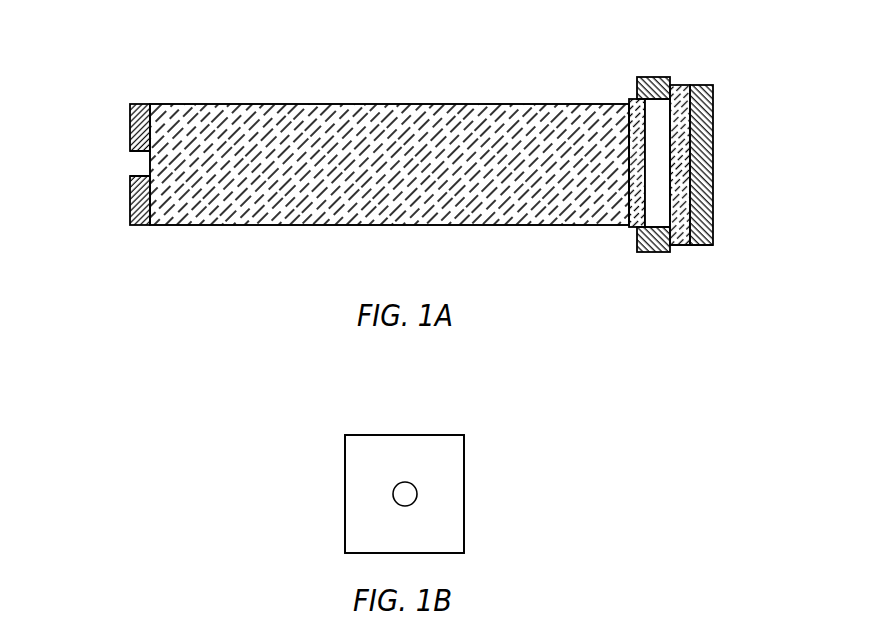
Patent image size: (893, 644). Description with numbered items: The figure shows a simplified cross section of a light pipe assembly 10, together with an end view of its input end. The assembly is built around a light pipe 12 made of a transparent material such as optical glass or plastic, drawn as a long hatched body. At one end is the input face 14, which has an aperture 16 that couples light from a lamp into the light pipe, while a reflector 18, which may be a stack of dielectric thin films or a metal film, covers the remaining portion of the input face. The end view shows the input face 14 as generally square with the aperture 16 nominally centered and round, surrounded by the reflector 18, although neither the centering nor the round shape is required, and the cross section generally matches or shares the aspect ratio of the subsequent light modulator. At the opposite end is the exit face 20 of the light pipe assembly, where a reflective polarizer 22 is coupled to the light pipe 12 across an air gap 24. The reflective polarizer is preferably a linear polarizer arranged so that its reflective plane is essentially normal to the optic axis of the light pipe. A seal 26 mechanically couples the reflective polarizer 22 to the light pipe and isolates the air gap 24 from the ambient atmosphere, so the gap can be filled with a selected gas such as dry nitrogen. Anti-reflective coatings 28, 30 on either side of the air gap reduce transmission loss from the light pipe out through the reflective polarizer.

In FIG. 1A, the light pipe assembly 10 is at (367, 63).
In FIG. 1A, the light pipe 12 is at (305, 103).
In FIG. 1A, the input face 14 is at (93, 207).
In FIG. 1B, the input face 14 is at (406, 434).
In FIG. 1A, the aperture 16 is at (137, 163).
In FIG. 1B, the aperture 16 is at (412, 494).
In FIG. 1A, the reflector 18 is at (140, 103).
In FIG. 1B, the reflector 18 is at (457, 475).
In FIG. 1A, the exit face 20 is at (742, 155).
In FIG. 1A, the reflective polarizer 22 is at (702, 85).
In FIG. 1A, the air gap 24 is at (658, 105).
In FIG. 1A, the seal 26 is at (655, 77).
In FIG. 1A, the anti-reflective coating 28 is at (635, 227).
In FIG. 1A, the anti-reflective coating 30 is at (680, 245).